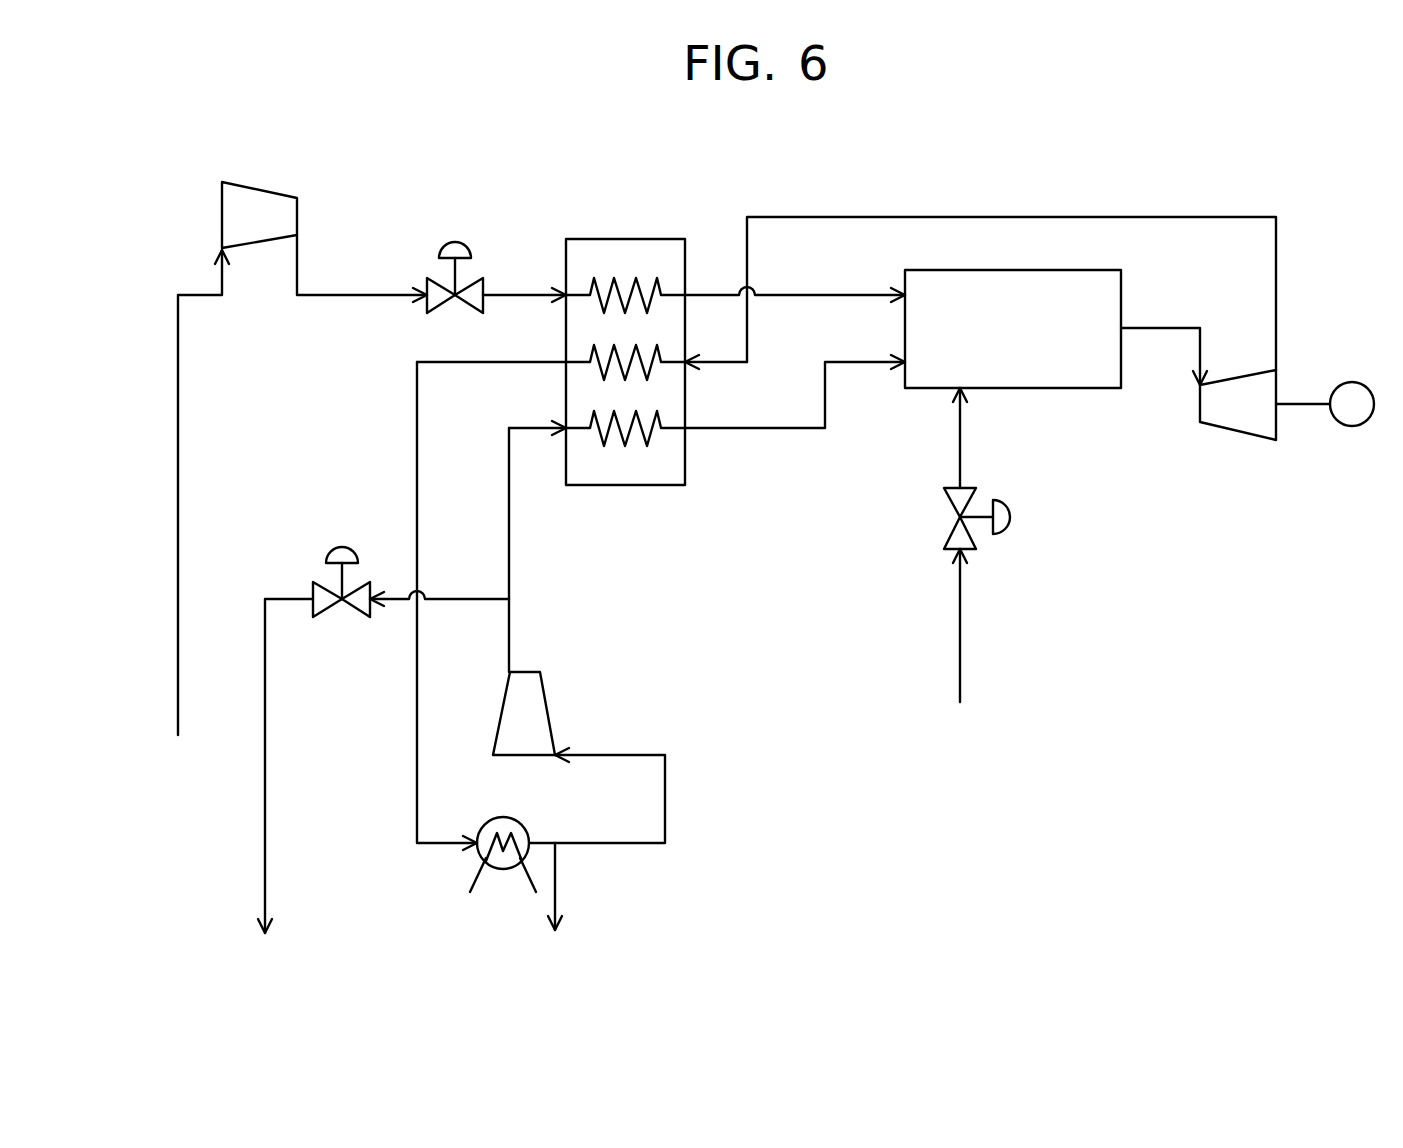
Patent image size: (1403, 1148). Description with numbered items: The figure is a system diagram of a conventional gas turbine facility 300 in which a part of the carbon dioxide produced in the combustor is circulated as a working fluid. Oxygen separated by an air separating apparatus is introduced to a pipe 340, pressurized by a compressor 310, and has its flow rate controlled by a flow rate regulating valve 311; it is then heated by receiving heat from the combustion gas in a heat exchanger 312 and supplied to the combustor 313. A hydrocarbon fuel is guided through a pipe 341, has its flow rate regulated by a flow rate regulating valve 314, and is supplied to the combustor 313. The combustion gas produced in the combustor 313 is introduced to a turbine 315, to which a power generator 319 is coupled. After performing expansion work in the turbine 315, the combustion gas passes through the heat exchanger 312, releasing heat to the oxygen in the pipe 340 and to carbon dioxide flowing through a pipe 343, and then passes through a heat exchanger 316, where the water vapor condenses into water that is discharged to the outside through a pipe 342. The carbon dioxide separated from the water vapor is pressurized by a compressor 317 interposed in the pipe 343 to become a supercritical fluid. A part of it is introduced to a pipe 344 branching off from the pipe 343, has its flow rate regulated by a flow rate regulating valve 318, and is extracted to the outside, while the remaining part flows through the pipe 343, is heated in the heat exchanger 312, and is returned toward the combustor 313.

The gas turbine facility 300 is at (652, 158).
The compressor 310 is at (260, 188).
The flow rate regulating valve 311 is at (437, 280).
The heat exchanger 312 is at (628, 238).
The combustor 313 is at (1007, 269).
The flow rate regulating valve 314 is at (943, 526).
The turbine 315 is at (1235, 432).
The heat exchanger 316 is at (503, 818).
The compressor 317 is at (557, 716).
The flow rate regulating valve 318 is at (322, 581).
The power generator 319 is at (1352, 427).
The pipe 340 is at (178, 506).
The pipe 341 is at (960, 632).
The pipe 342 is at (560, 900).
The pipe 343 is at (509, 505).
The pipe 344 is at (464, 597).